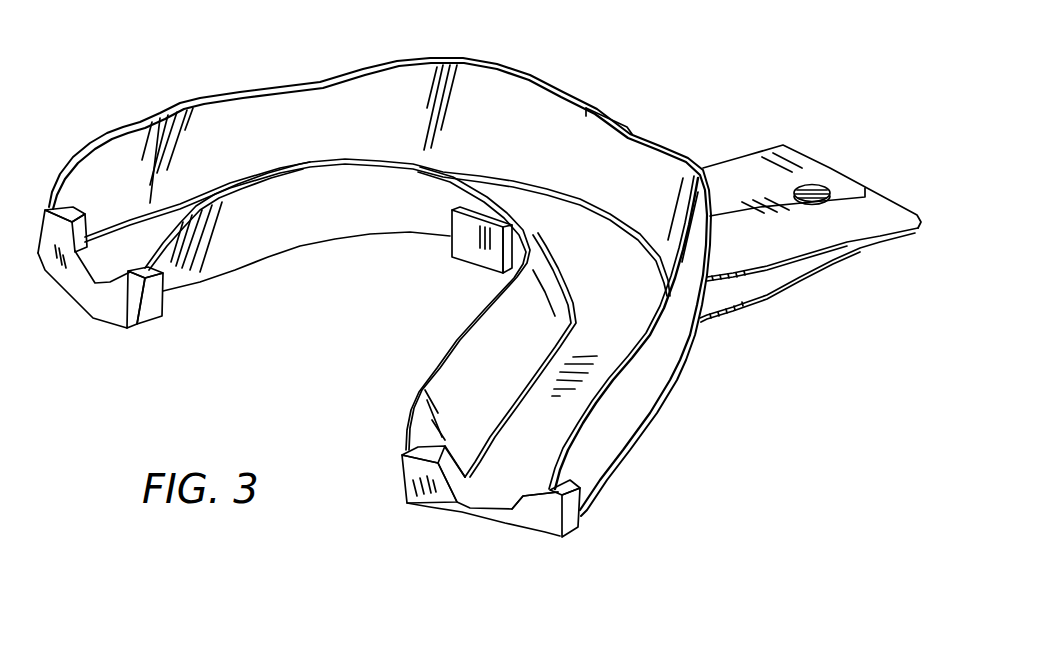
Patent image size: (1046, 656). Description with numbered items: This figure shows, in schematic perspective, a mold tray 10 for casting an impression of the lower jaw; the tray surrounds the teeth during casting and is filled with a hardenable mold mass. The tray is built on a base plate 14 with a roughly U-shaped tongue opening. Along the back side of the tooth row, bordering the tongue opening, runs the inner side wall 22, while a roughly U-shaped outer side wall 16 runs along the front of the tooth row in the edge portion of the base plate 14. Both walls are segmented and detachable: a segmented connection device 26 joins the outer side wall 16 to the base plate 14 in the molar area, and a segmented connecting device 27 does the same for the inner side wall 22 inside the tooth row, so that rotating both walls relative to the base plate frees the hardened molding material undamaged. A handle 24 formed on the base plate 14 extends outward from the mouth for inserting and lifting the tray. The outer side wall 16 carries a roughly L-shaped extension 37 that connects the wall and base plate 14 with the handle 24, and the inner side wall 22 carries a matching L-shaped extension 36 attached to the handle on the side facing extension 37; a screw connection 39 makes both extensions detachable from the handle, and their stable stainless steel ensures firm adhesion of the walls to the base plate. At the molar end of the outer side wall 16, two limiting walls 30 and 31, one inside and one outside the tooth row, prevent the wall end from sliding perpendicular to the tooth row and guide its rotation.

The mold tray 10 is at (476, 310).
The base plate 14 is at (317, 429).
The outer side wall 16 is at (381, 287).
The inner side wall 22 is at (360, 319).
The handle 24 is at (810, 214).
The segmented connection device 26 is at (343, 403).
The segmented connecting device 27 is at (296, 424).
The limiting wall 30 is at (585, 460).
The limiting wall 31 is at (535, 466).
The extension 36 is at (457, 261).
The extension 37 is at (765, 144).
The screw connection 39 is at (819, 139).